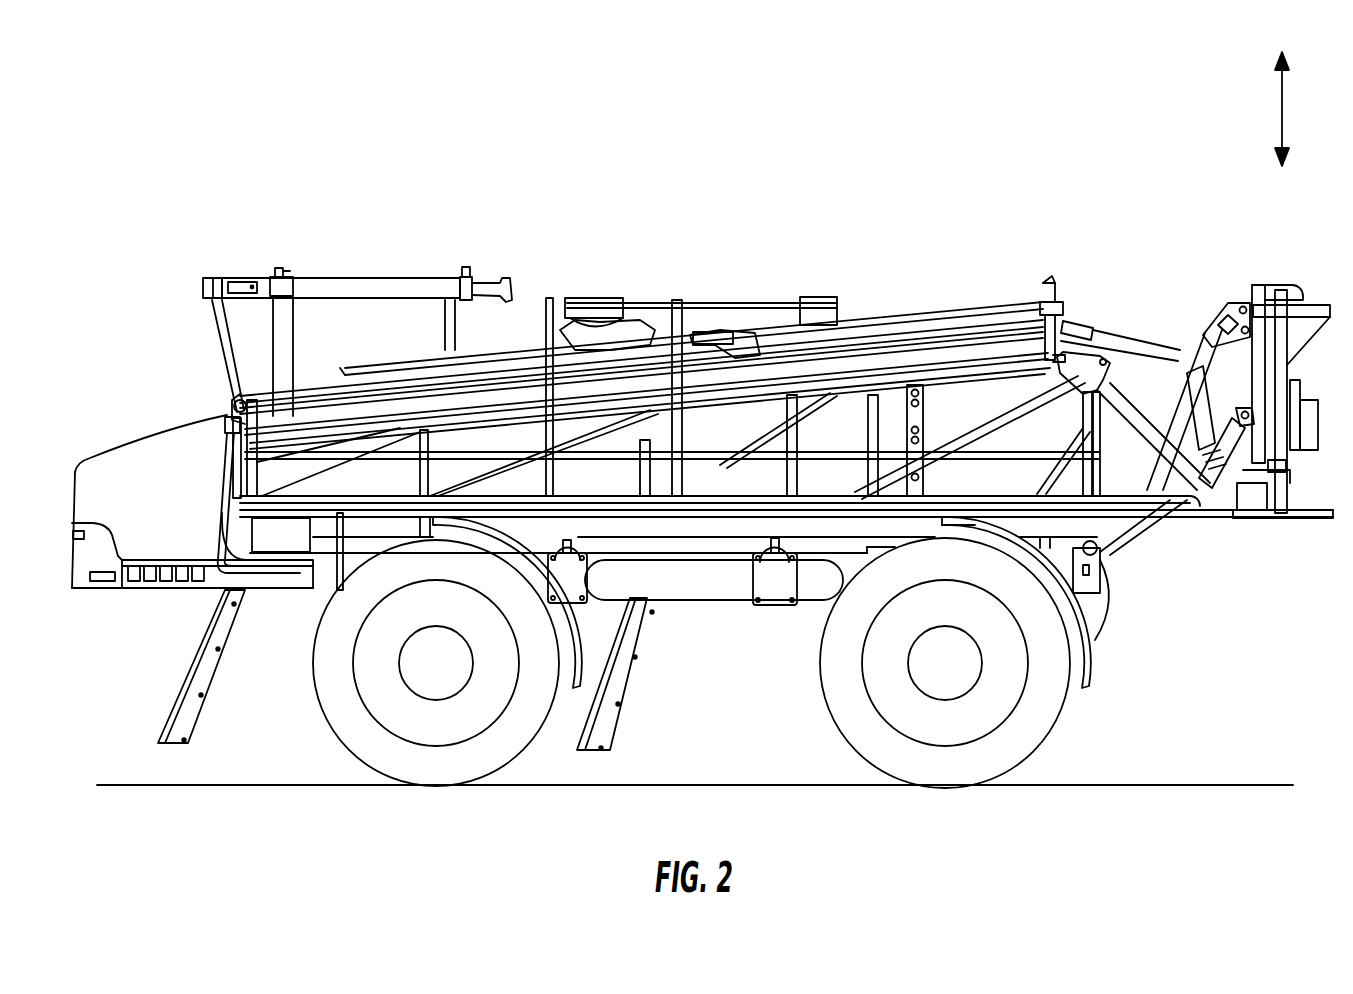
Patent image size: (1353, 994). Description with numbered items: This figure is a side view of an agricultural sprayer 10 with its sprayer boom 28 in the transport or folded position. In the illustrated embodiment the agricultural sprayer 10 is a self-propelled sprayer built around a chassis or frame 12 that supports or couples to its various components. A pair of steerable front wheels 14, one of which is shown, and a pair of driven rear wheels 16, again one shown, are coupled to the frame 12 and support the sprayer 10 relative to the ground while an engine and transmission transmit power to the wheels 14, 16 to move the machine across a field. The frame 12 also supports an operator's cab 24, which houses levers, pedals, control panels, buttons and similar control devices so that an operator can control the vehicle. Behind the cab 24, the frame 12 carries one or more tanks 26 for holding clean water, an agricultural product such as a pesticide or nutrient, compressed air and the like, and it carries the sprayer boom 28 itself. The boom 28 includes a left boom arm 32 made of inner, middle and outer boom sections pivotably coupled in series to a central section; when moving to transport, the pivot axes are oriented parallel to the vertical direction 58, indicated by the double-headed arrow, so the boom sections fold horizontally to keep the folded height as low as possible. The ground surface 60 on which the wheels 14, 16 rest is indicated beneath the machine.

The agricultural sprayer 10 is at (1097, 230).
The frame 12 is at (700, 585).
The front wheels 14 is at (513, 728).
The rear wheels 16 is at (1023, 738).
The operator's cab 24 is at (356, 276).
The tank 26 is at (581, 336).
The sprayer boom 28 is at (923, 270).
The left boom arm 32 is at (877, 312).
The vertical direction 58 is at (1281, 108).
The ground surface 60 is at (1223, 787).